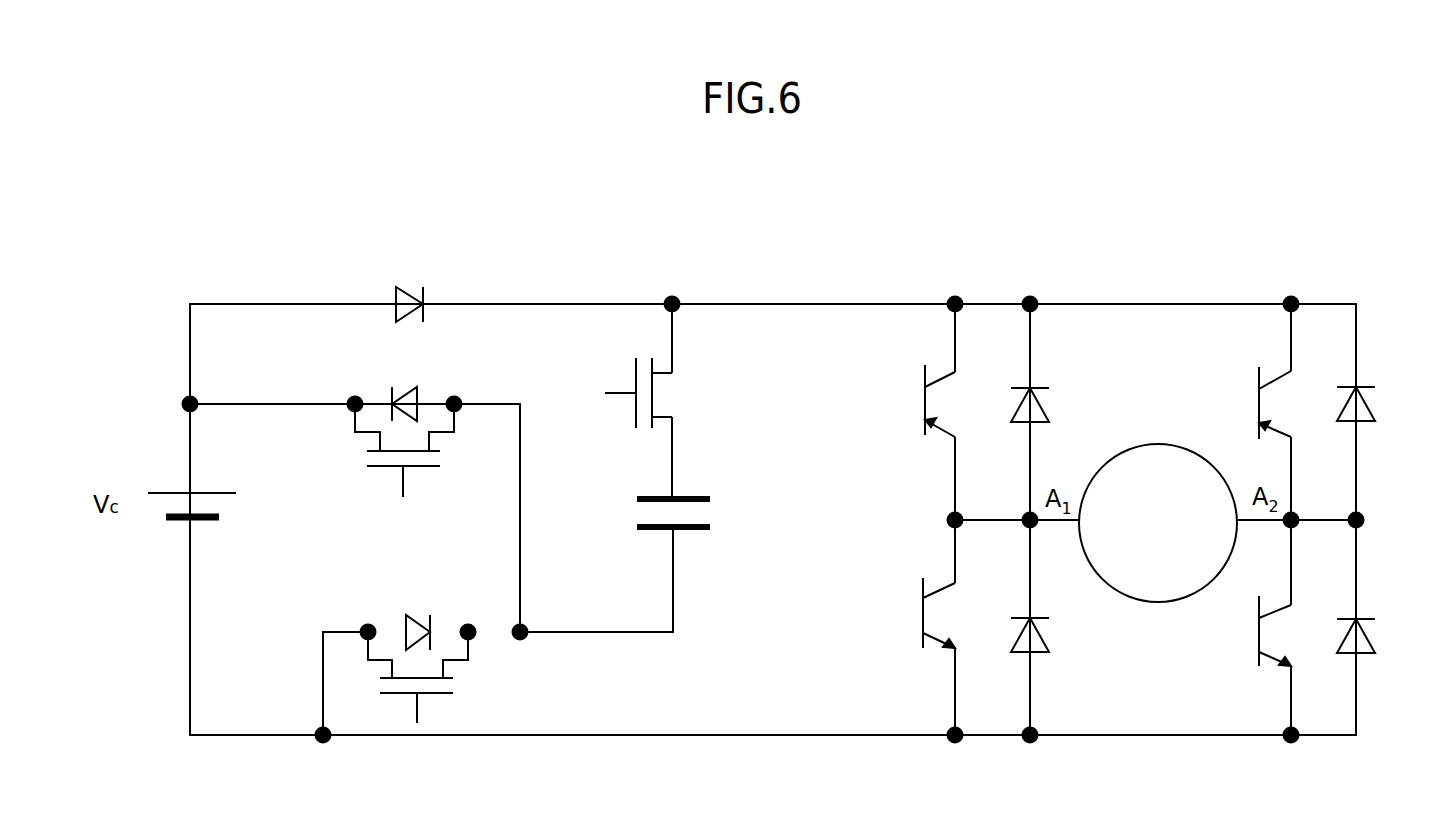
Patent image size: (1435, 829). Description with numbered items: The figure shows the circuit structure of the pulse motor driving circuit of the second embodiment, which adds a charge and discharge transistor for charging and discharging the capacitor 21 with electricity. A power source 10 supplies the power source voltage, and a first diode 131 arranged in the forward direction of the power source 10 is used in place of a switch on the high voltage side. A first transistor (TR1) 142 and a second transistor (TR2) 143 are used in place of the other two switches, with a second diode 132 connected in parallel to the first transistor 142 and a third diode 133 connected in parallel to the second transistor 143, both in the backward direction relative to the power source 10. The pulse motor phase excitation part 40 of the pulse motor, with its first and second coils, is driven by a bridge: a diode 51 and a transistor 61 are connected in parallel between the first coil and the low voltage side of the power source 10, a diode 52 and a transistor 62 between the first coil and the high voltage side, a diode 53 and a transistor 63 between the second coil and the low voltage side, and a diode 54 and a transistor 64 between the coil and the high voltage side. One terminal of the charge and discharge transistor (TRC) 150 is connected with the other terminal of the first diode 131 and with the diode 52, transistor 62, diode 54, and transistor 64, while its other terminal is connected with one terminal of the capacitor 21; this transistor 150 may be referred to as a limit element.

The power source 10 is at (163, 492).
The capacitor 21 is at (693, 532).
The pulse motor phase excitation part 40 is at (1157, 446).
The diode 51 is at (1043, 655).
The diode 52 is at (1049, 419).
The diode 53 is at (1340, 654).
The diode 54 is at (1371, 411).
The transistor 61 is at (945, 640).
The transistor 62 is at (946, 374).
The transistor 63 is at (1281, 665).
The transistor 64 is at (1282, 378).
The first diode 131 is at (424, 289).
The second diode 132 is at (418, 391).
The third diode 133 is at (407, 613).
The first transistor 142 is at (408, 467).
The second transistor 143 is at (442, 694).
The charge and discharge transistor 150 is at (635, 410).